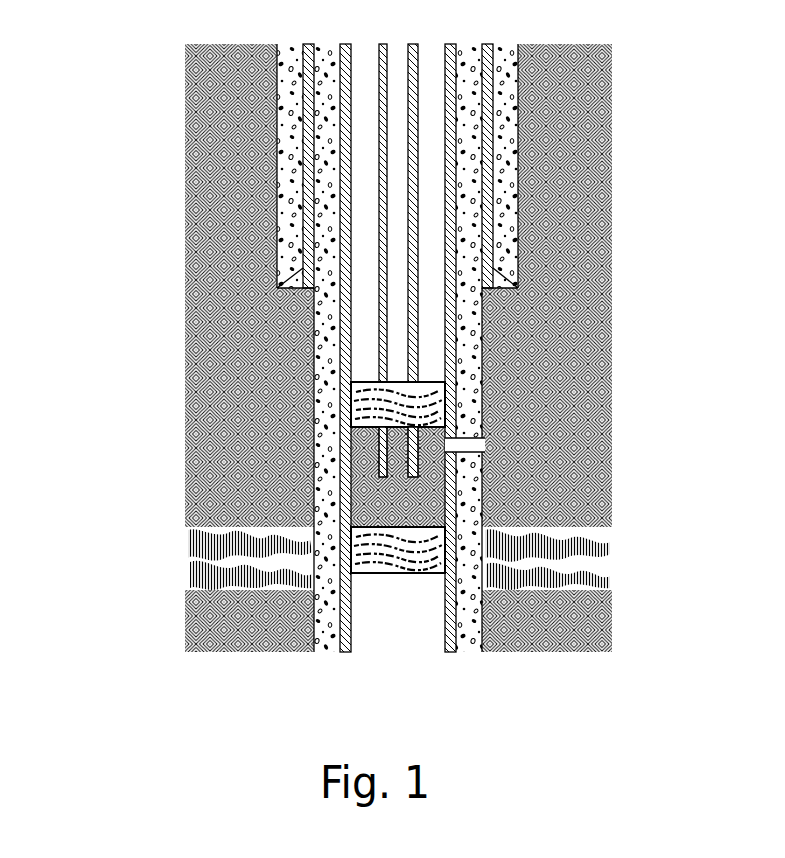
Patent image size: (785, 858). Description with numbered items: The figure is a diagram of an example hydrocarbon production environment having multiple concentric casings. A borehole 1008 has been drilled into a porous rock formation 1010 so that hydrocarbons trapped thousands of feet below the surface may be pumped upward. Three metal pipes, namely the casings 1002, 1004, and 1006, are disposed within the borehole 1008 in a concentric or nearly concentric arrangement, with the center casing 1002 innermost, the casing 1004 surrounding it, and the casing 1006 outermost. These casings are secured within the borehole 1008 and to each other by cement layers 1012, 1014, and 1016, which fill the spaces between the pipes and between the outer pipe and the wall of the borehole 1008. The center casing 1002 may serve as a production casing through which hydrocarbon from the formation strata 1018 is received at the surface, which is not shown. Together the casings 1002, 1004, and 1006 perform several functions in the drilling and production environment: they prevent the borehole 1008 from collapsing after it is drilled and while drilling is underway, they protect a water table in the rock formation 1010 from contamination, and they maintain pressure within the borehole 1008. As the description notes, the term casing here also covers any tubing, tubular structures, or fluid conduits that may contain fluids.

The center casing 1002 is at (382, 373).
The casing 1004 is at (343, 252).
The casing 1006 is at (308, 93).
The borehole 1008 is at (520, 238).
The rock formation 1010 is at (577, 110).
The cement layer 1012 is at (360, 320).
The cement layer 1014 is at (327, 168).
The cement layer 1016 is at (290, 58).
The formation strata 1018 is at (575, 482).